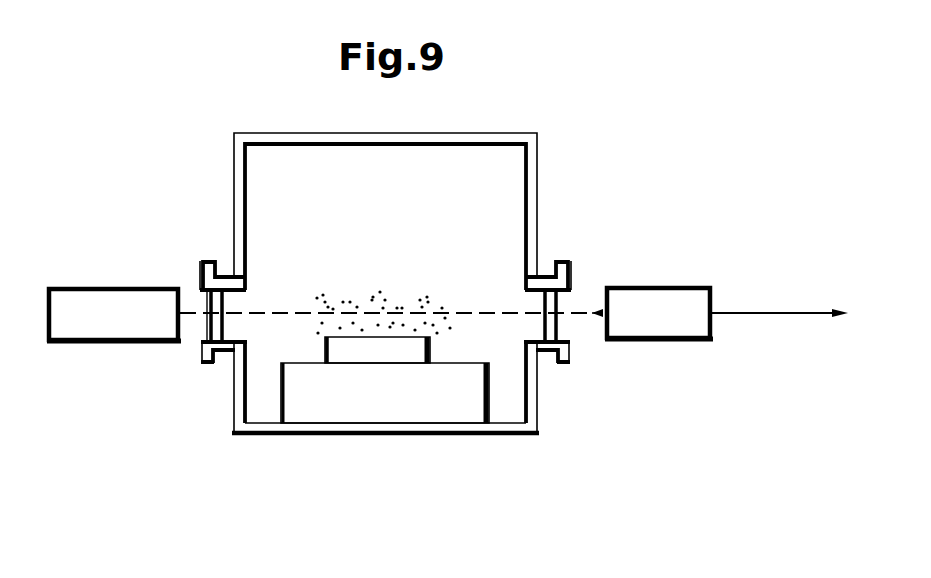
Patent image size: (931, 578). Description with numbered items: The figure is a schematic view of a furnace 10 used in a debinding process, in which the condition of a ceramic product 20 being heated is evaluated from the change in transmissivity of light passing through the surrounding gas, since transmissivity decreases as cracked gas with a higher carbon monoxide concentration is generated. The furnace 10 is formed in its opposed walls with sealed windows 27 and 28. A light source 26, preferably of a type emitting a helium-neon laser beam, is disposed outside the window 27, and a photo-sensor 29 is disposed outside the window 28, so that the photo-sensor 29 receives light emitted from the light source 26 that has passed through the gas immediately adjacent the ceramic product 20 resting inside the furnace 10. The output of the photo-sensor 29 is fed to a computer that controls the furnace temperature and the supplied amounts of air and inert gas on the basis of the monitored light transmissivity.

The furnace 10 is at (246, 437).
The ceramic product 20 is at (374, 362).
The light source 26 is at (126, 342).
The sealed window 27 is at (215, 330).
The sealed window 28 is at (553, 325).
The photo-sensor 29 is at (682, 340).